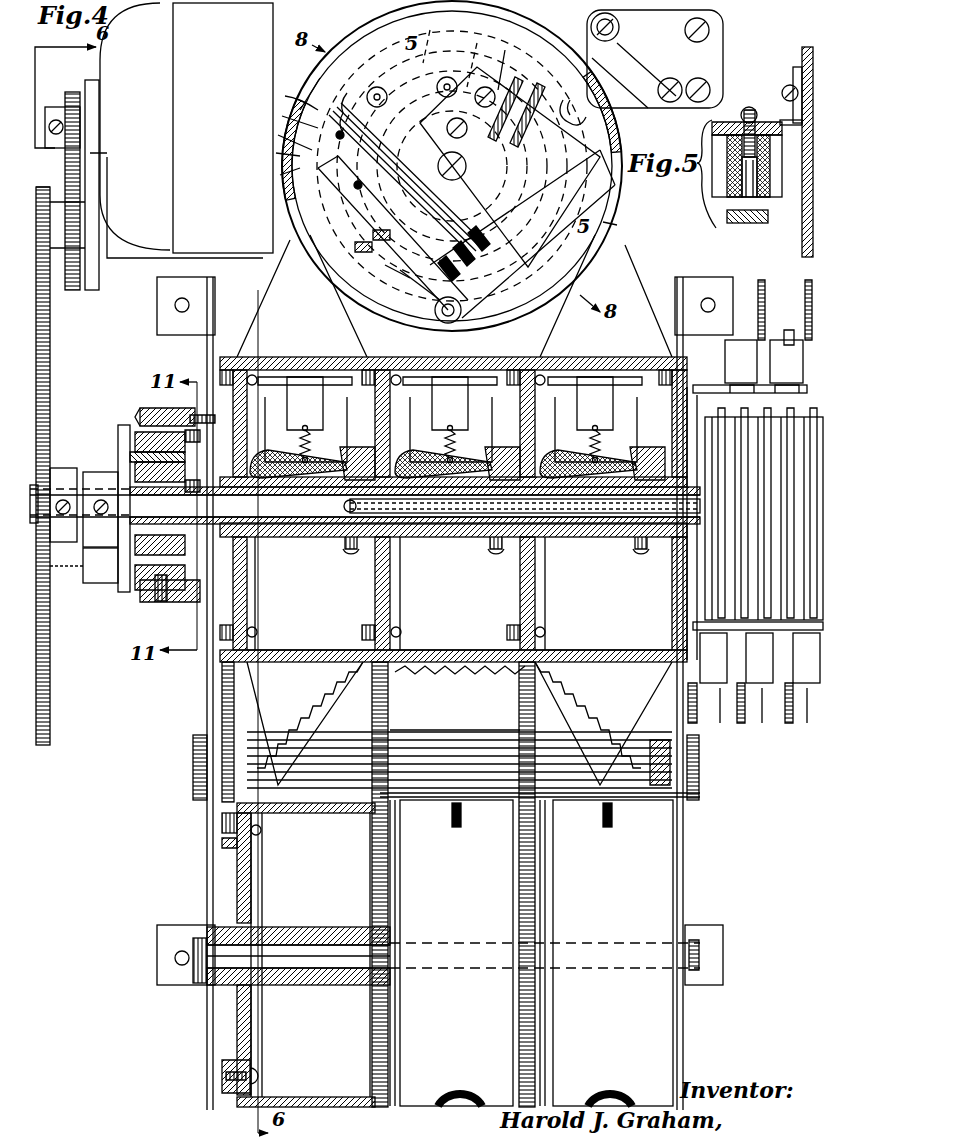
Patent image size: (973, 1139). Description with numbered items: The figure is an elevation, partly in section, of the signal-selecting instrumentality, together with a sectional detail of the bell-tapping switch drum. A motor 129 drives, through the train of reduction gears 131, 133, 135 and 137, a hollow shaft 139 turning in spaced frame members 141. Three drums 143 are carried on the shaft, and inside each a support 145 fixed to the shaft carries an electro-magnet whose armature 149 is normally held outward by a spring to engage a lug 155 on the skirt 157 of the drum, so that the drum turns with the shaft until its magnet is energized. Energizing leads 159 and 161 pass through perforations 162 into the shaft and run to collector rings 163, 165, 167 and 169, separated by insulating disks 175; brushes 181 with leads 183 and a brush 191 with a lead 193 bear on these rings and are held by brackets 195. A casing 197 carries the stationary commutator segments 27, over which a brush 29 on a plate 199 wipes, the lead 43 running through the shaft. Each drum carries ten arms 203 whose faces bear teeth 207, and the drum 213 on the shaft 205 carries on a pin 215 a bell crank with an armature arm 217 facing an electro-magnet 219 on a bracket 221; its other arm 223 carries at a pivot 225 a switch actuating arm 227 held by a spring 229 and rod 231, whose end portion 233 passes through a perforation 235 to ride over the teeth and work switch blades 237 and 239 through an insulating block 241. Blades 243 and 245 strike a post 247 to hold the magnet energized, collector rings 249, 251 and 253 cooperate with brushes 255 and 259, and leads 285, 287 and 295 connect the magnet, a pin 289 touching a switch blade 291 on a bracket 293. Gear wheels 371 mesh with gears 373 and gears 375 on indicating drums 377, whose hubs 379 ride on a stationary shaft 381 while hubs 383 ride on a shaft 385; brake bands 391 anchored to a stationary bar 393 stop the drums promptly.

In FIG. 4, the segments 27 is at (140, 412).
In FIG. 4, the commutator brush 29 is at (103, 583).
In FIG. 4, the lead 43 is at (62, 568).
In FIG. 4, the motor 129 is at (146, 218).
In FIG. 4, the gear 131 is at (72, 92).
In FIG. 4, the gear 133 is at (90, 290).
In FIG. 4, the gear 135 is at (43, 187).
In FIG. 4, the gear 137 is at (50, 345).
In FIG. 4, the hollow shaft 139 is at (262, 490).
In FIG. 4, the frame members 141 is at (207, 672).
In FIG. 4, the drums 143 is at (255, 565).
In FIG. 4, the support 145 is at (492, 415).
In FIG. 4, the armature 149 is at (300, 377).
In FIG. 4, the lug 155 is at (330, 377).
In FIG. 4, the skirt 157 is at (295, 650).
In FIG. 4, the energizing leads 159 is at (304, 448).
In FIG. 4, the energizing leads 161 is at (415, 452).
In FIG. 4, the perforations 162 is at (344, 506).
In FIG. 4, the collector ring 163 is at (760, 582).
In FIG. 4, the collector ring 165 is at (730, 570).
In FIG. 4, the collector ring 167 is at (712, 563).
In FIG. 4, the collector ring 169 is at (778, 518).
In FIG. 4, the annular disk 175 is at (720, 435).
In FIG. 4, the brushes 181 is at (725, 350).
In FIG. 4, the leads 183 is at (760, 280).
In FIG. 4, the brush 191 is at (789, 330).
In FIG. 4, the lead 193 is at (805, 282).
In FIG. 4, the brackets 195 is at (708, 385).
In FIG. 4, the casing 197 is at (175, 600).
In FIG. 4, the plate 199 is at (118, 450).
In FIG. 4, the arms 203 is at (262, 290).
In FIG. 5, the shaft 205 is at (452, 180).
In FIG. 4, the teeth 207 is at (325, 316).
In FIG. 5, the drum 213 is at (802, 62).
In FIG. 5, the projecting pin 215 is at (462, 310).
In FIG. 5, the arm 217 is at (490, 262).
In FIG. 5, the electro-magnet 219 is at (568, 100).
In FIG. 5, the bracket 221 is at (782, 118).
In FIG. 5, the arm 223 is at (420, 290).
In FIG. 5, the pivot 225 is at (412, 272).
In FIG. 5, the switch actuating arm 227 is at (280, 175).
In FIG. 5, the spring 229 is at (362, 252).
In FIG. 5, the rod 231 is at (398, 262).
In FIG. 5, the end portion 233 is at (278, 135).
In FIG. 5, the perforation 235 is at (276, 153).
In FIG. 5, the switch blade 237 is at (282, 116).
In FIG. 5, the switch blade 239 is at (285, 96).
In FIG. 5, the block 241 is at (350, 192).
In FIG. 5, the switch blade 243 is at (347, 100).
In FIG. 5, the switch blade 245 is at (380, 87).
In FIG. 5, the post 247 is at (322, 72).
In FIG. 5, the collector ring 249 is at (500, 52).
In FIG. 5, the collector ring 251 is at (458, 80).
In FIG. 5, the collector ring 253 is at (430, 35).
In FIG. 5, the brush 255 is at (630, 223).
In FIG. 5, the brush 259 is at (548, 228).
In FIG. 5, the lead 285 is at (518, 78).
In FIG. 5, the lead 287 is at (540, 90).
In FIG. 5, the pin 289 is at (618, 110).
In FIG. 5, the switch blade 291 is at (591, 28).
In FIG. 5, the bracket 293 is at (710, 53).
In FIG. 5, the lead 295 is at (617, 180).
In FIG. 4, the gear wheel 371 is at (200, 650).
In FIG. 4, the gear 373 is at (222, 705).
In FIG. 4, the gears 375 is at (237, 820).
In FIG. 4, the drums 377 is at (255, 875).
In FIG. 4, the hubs 379 is at (275, 927).
In FIG. 4, the stationary shaft 381 is at (290, 968).
In FIG. 4, the hub 383 is at (475, 735).
In FIG. 4, the stationary shaft 385 is at (655, 742).
In FIG. 4, the brake band 391 is at (410, 1010).
In FIG. 4, the stationary bar 393 is at (685, 808).